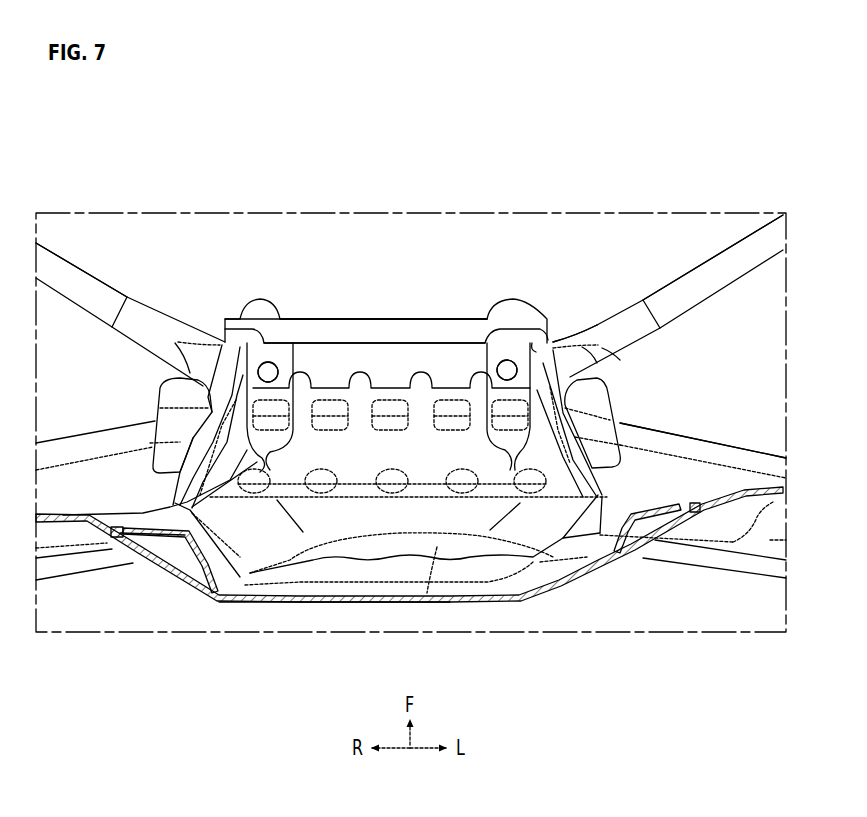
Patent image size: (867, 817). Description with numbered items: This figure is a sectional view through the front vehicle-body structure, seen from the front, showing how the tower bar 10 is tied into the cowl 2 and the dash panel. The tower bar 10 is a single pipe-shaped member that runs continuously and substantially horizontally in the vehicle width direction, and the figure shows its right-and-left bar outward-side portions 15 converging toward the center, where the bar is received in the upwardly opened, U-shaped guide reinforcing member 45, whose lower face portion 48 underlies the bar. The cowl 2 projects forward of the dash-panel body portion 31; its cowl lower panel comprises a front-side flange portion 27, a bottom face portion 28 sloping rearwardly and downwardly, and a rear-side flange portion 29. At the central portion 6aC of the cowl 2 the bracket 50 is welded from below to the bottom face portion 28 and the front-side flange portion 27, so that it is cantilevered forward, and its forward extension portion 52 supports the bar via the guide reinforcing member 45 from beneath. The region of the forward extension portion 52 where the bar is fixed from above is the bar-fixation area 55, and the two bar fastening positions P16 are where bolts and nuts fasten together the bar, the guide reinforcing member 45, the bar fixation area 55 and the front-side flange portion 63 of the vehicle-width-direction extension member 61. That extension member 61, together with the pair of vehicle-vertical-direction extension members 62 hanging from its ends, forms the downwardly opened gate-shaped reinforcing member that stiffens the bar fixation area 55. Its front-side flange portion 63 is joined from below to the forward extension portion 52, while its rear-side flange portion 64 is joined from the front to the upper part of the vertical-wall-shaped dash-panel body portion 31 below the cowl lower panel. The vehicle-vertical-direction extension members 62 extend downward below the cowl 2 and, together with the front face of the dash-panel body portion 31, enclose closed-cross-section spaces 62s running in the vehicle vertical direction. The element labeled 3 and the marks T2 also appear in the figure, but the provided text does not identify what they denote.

The cowl 2 is at (710, 432).
The floor panel 3 is at (384, 606).
The tower bar 10 is at (114, 292).
The bar outward-side portions 15 is at (64, 260).
The front-side flange portion 27 is at (742, 457).
The bottom face portion 28 is at (643, 470).
The rear-side flange portion 29 is at (773, 568).
The dash-panel body portion 31 is at (320, 604).
The guide reinforcing member 45 is at (596, 320).
The lower face portion 48 is at (635, 320).
The bracket 50 is at (367, 315).
The forward extension portion 52 is at (400, 330).
The bar-fixation area 55 is at (329, 315).
The vehicle-width-direction extension member 61 is at (298, 320).
The vehicle-vertical-direction extension members 62 is at (198, 573).
The closed-cross section spaces 62s is at (176, 561).
The front-side flange portion 63 is at (477, 347).
The rear-side flange portion 64 is at (427, 593).
The central portion 6aC is at (404, 290).
The bar fastening positions P16 is at (268, 360).
The tolerance region T2 is at (281, 364).